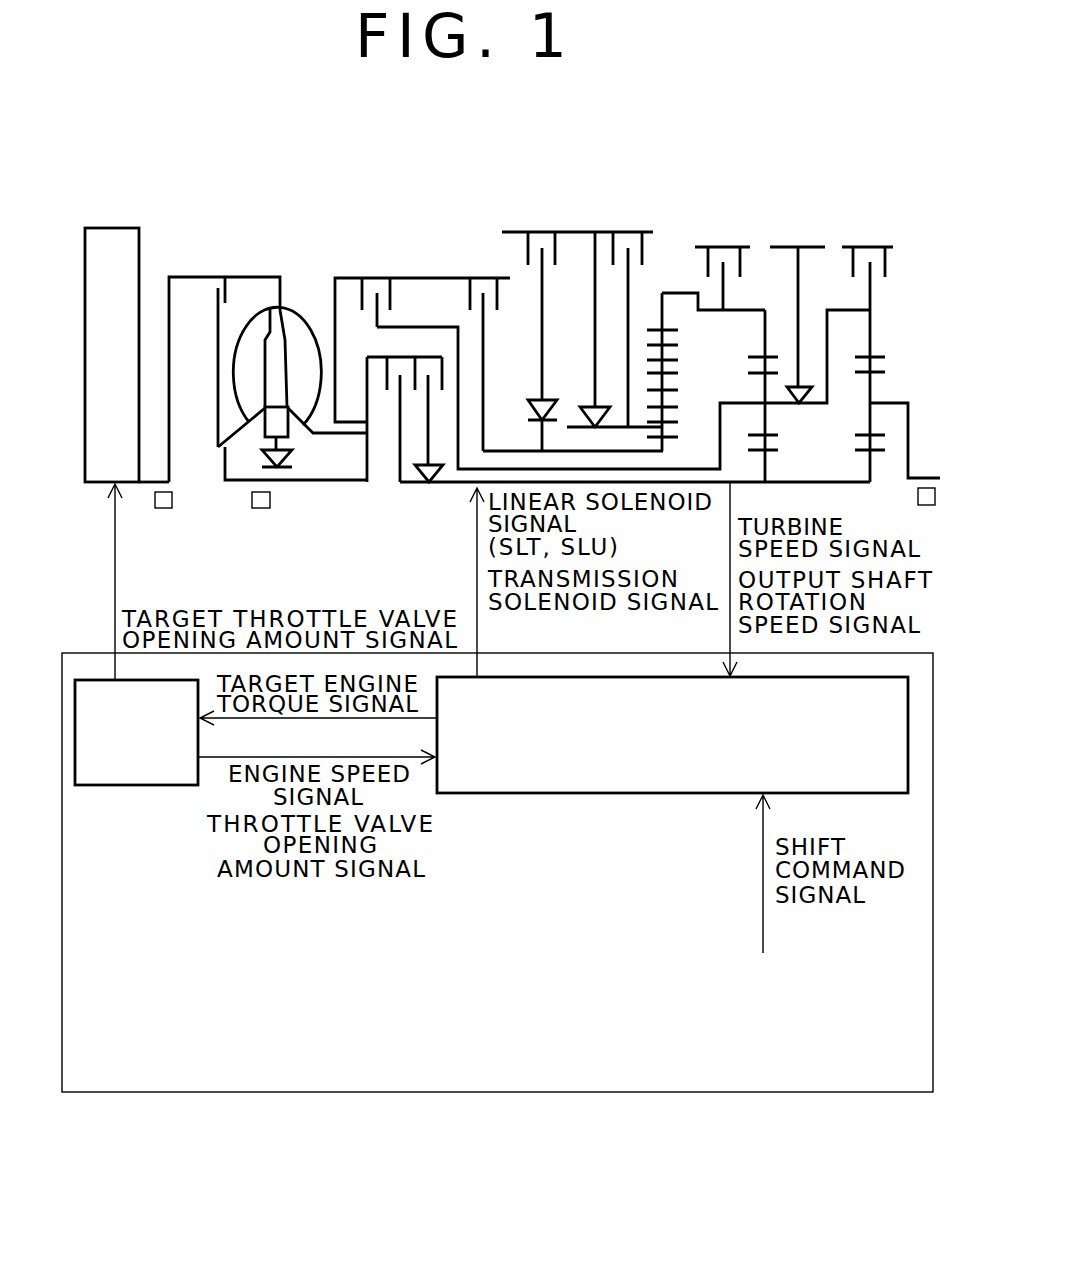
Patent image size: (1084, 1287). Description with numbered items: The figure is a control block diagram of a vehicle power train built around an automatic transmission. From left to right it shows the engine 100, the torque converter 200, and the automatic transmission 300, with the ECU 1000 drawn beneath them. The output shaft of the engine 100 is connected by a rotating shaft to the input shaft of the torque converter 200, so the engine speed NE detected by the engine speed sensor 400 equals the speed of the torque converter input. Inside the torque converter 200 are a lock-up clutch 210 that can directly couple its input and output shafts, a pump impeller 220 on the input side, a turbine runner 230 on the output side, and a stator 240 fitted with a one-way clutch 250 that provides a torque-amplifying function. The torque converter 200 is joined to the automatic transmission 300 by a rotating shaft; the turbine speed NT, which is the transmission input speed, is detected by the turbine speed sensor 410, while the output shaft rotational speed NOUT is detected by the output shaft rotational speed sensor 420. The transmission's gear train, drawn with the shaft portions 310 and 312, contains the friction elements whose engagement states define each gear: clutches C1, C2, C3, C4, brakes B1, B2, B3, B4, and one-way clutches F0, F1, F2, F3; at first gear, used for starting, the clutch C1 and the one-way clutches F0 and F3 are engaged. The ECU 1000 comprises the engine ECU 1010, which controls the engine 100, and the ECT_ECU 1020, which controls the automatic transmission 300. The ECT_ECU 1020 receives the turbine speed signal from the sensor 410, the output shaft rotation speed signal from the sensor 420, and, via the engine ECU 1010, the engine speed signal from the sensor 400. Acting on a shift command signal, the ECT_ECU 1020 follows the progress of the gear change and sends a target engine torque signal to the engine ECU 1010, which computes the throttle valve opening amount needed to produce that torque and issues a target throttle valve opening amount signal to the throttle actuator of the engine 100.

The engine 100 is at (116, 228).
The torque converter 200 is at (262, 374).
The lock-up clutch 210 is at (200, 297).
The pump impeller 220 is at (280, 443).
The turbine runner 230 is at (245, 318).
The stator 240 is at (256, 440).
The one-way clutch 250 is at (289, 466).
The automatic transmission 300 is at (902, 167).
The input shaft / gear train 310 is at (428, 357).
The clutch C3 friction plate 312 is at (468, 292).
The engine speed sensor 400 is at (163, 509).
The turbine speed sensor 410 is at (261, 509).
The output shaft rotational speed sensor 420 is at (918, 497).
The ECU 1000 is at (698, 1092).
The engine ECU 1010 is at (135, 787).
The ECT_ECU 1020 is at (663, 793).
The clutch C1 is at (434, 380).
The clutch C2 is at (376, 285).
The clutch C3 is at (483, 346).
The clutch C4 is at (393, 383).
The brake B1 is at (626, 313).
The brake B2 is at (736, 347).
The brake B3 is at (540, 299).
The brake B4 is at (867, 347).
The one-way clutch F0 is at (431, 492).
The one-way clutch F1 is at (611, 329).
The one-way clutch F2 is at (530, 411).
The one-way clutch F3 is at (797, 342).